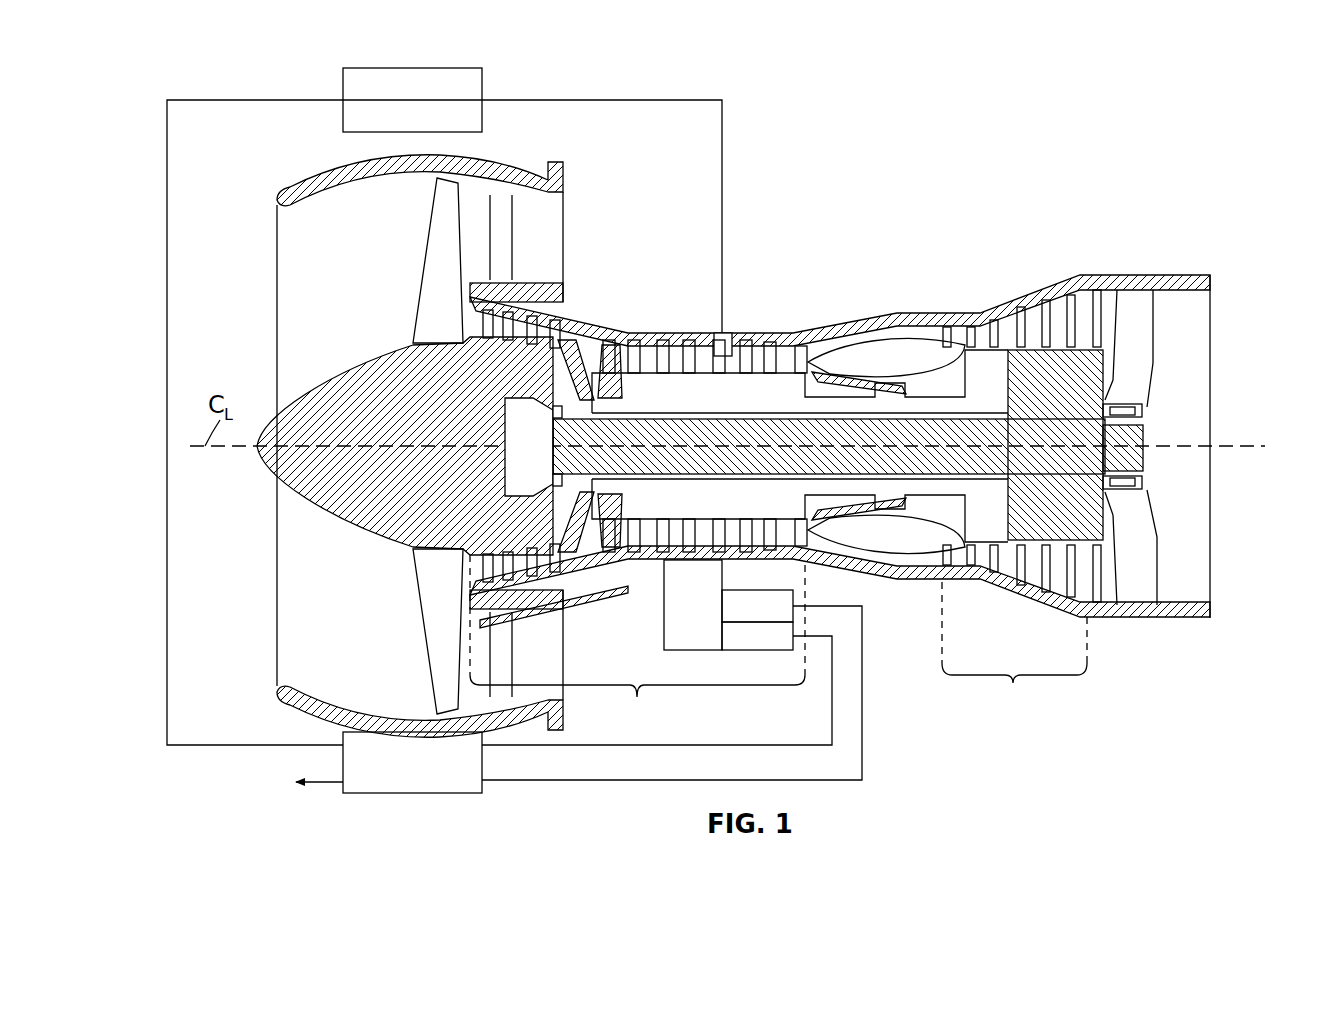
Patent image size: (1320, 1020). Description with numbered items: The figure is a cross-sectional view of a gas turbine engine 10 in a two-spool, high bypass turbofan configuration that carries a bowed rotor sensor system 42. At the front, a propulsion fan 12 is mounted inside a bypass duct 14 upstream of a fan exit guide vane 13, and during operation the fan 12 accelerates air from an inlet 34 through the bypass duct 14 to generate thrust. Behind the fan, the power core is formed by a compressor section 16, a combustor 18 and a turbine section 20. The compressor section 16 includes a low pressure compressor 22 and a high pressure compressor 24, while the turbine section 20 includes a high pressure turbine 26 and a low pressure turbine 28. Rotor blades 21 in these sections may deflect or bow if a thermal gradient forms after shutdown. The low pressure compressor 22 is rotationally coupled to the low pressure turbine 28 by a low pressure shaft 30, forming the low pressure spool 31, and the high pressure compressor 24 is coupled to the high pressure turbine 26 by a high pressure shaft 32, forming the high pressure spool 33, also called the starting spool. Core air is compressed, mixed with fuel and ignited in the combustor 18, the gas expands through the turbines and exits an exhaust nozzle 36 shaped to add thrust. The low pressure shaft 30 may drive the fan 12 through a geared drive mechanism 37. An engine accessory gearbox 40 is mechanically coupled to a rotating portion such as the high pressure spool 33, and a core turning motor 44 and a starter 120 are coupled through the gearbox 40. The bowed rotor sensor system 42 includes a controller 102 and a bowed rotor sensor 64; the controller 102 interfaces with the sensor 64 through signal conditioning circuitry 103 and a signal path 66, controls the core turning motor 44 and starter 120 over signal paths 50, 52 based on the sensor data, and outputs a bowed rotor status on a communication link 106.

The gas turbine engine 10 is at (276, 150).
The propulsion fan 12 is at (437, 246).
The fan exit guide vane 13 is at (508, 195).
The bypass duct 14 is at (550, 238).
The compressor section 16 is at (637, 642).
The combustor 18 is at (893, 350).
The turbine section 20 is at (1014, 646).
The rotor blades 21 is at (800, 360).
The low pressure compressor 22 is at (556, 583).
The high pressure compressor 24 is at (642, 568).
The high pressure turbine 26 is at (984, 586).
The low pressure turbine 28 is at (1076, 610).
The low pressure shaft 30 is at (830, 492).
The low pressure spool 31 is at (1062, 368).
The high pressure shaft 32 is at (848, 464).
The high pressure spool 33 is at (668, 382).
The inlet 34 is at (290, 287).
The exhaust nozzle 36 is at (1192, 368).
The geared drive mechanism 37 is at (524, 460).
The engine accessory gearbox 40 is at (664, 632).
The bowed rotor sensor system 42 is at (258, 730).
The core turning motor 44 is at (748, 651).
The signal path 50 is at (787, 744).
The signal path 52 is at (652, 782).
The bowed rotor sensor 64 is at (721, 334).
The signal path 66 is at (728, 203).
The controller 102 is at (423, 795).
The signal conditioning circuitry 103 is at (405, 67).
The communication link 106 is at (335, 786).
The starter 120 is at (743, 592).